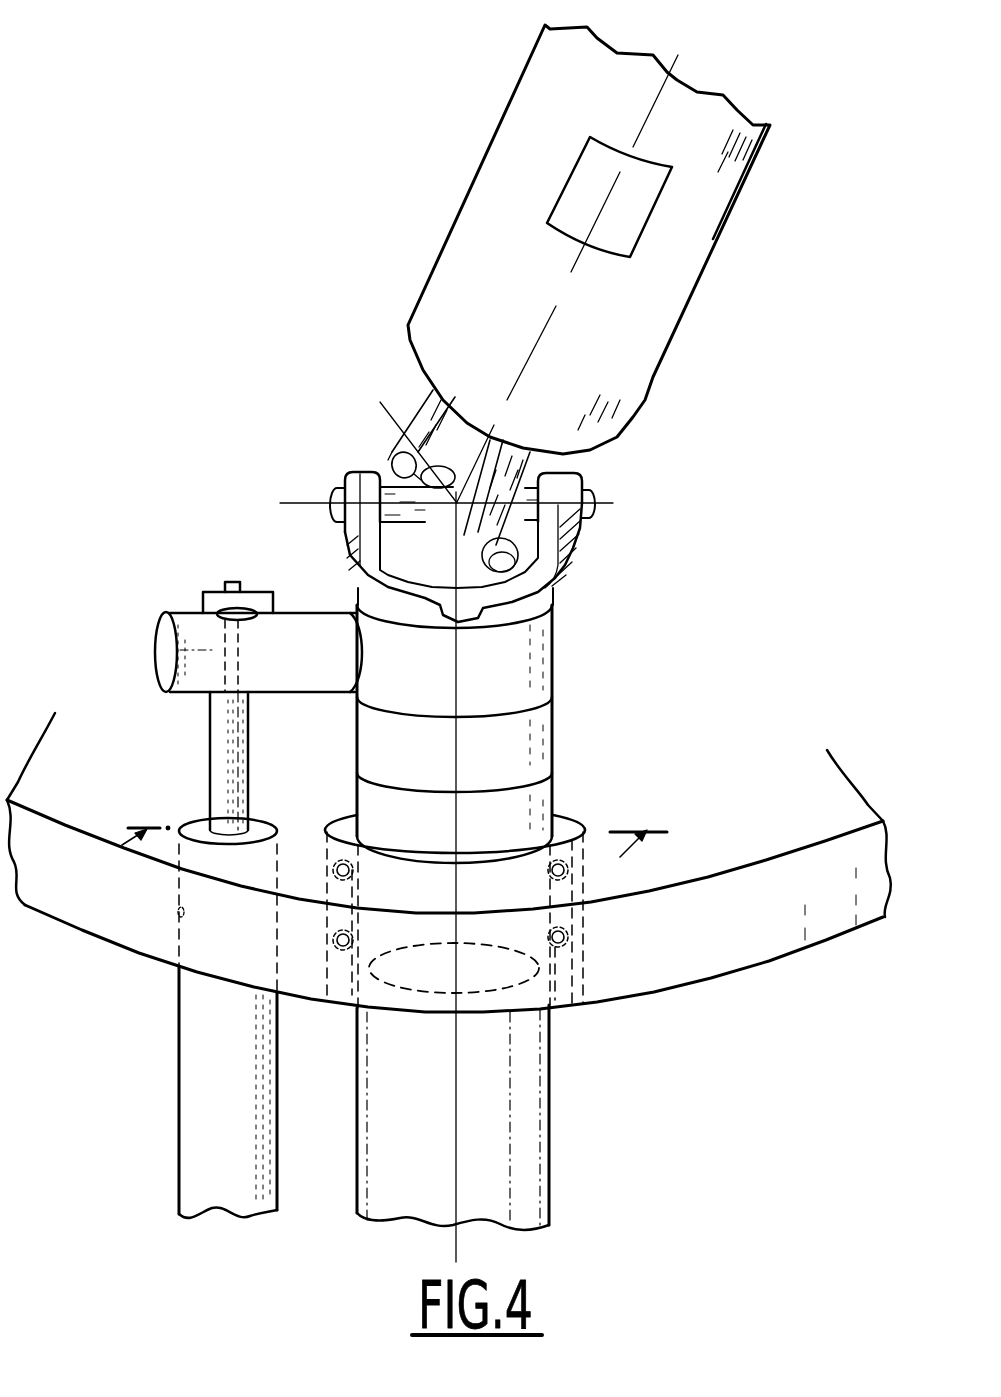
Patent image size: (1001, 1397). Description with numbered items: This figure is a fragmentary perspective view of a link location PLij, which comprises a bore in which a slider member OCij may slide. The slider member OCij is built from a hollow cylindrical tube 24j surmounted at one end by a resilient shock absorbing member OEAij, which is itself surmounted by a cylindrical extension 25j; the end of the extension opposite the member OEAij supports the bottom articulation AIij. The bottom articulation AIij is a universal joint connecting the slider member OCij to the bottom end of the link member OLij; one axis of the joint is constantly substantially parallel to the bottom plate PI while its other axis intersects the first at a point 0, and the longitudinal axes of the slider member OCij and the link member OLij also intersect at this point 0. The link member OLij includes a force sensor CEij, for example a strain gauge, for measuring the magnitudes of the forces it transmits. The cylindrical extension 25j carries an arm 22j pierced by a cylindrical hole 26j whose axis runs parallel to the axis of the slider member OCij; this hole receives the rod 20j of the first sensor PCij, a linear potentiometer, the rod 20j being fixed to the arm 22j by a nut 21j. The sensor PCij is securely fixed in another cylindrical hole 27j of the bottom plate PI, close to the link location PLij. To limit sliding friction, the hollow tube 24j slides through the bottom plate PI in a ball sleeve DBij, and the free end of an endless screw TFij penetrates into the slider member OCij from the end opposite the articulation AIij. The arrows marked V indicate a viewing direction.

The link member OLij is at (680, 224).
The force sensor CEij is at (572, 178).
The point O 0 is at (450, 528).
The bottom articulation AIij is at (573, 540).
The slider member OCij is at (567, 762).
The cylindrical extension 25j is at (553, 650).
The resilient shock absorbing member OEAij is at (530, 740).
The hollow cylindrical tube 24j is at (553, 800).
The arm 22j is at (168, 634).
The nut 21j is at (205, 586).
The cylindrical hole 26j is at (227, 651).
The rod 20j is at (223, 761).
The bottom plate PI is at (822, 918).
The link location PLij is at (586, 828).
The section view indicator V is at (389, 851).
The ball sleeve DBij is at (477, 943).
The cylindrical hole 27j is at (180, 908).
The first sensor PCij is at (203, 1079).
The endless screw TFij is at (516, 1178).